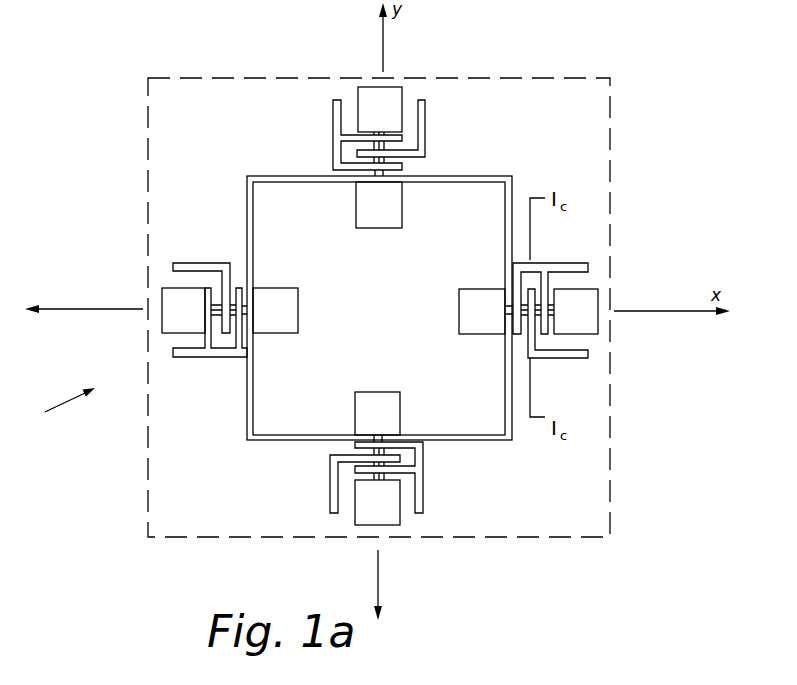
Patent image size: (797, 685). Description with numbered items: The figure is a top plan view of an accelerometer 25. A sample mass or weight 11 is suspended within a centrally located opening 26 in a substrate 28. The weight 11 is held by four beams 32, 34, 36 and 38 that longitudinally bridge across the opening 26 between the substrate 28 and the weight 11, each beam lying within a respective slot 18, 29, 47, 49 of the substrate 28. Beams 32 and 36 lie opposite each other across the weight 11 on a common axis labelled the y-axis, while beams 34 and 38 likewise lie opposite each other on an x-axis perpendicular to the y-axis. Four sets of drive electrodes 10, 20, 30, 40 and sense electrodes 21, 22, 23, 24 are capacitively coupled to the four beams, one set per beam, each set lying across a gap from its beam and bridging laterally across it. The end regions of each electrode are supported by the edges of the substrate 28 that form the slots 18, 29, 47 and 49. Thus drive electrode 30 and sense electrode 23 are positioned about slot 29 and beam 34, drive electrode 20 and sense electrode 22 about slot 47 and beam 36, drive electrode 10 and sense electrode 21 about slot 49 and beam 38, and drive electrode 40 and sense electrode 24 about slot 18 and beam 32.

The drive electrode 10 is at (198, 263).
The sample mass or weight 11 is at (388, 318).
The slot 18 is at (385, 180).
The drive electrode 20 is at (330, 495).
The sense electrode 21 is at (199, 357).
The sense electrode 22 is at (423, 492).
The sense electrode 23 is at (562, 263).
The sense electrode 24 is at (333, 118).
The accelerometer 25 is at (56, 410).
The centrally located opening 26 is at (490, 444).
The substrate 28 is at (605, 112).
The slot 29 is at (507, 316).
The drive electrode 30 is at (571, 358).
The beam 32 is at (380, 132).
The beam 34 is at (558, 310).
The beam 36 is at (382, 483).
The beam 38 is at (203, 310).
The drive electrode 40 is at (427, 118).
The slot 47 is at (375, 437).
The slot 49 is at (252, 317).